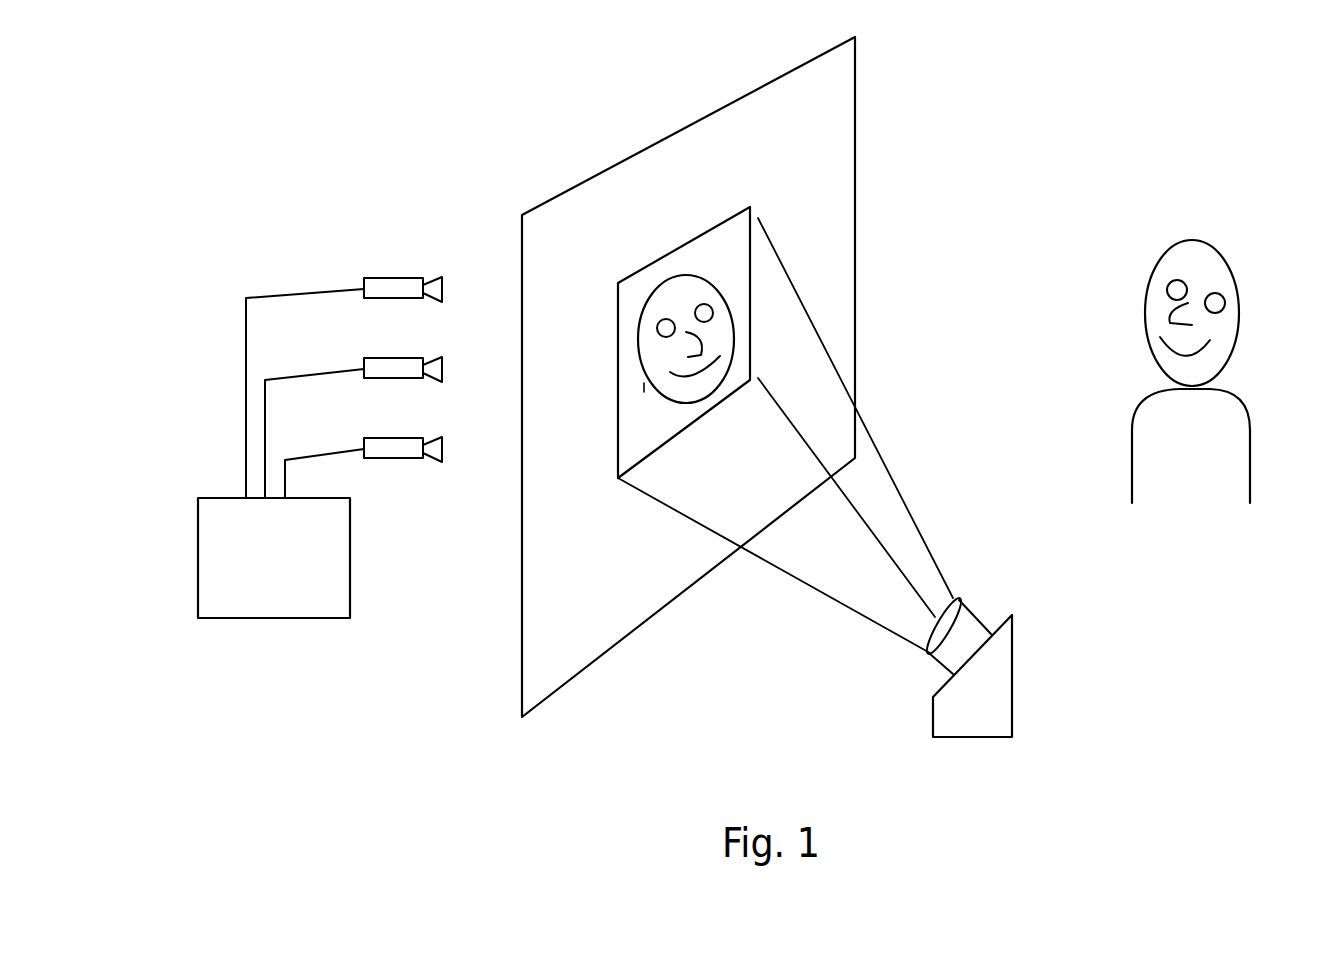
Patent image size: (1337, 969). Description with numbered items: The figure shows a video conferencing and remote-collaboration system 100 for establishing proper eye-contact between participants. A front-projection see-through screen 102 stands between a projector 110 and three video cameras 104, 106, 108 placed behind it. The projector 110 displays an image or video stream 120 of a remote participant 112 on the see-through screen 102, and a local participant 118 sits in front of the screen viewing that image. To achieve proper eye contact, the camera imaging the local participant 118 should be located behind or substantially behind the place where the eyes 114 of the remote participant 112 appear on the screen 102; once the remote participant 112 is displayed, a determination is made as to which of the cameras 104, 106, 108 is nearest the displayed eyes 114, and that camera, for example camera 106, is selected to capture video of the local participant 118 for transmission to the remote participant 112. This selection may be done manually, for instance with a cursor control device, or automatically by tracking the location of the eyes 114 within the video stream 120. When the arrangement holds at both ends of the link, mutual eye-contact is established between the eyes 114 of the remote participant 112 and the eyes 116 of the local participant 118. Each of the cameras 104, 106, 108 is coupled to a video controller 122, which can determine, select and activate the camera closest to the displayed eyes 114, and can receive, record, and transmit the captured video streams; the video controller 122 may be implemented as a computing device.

The video conferencing and/or remote-collaboration system 100 is at (268, 114).
The see-through screen 102 is at (562, 193).
The video camera 104 is at (404, 277).
The video camera 106 is at (404, 357).
The video camera 108 is at (404, 437).
The projector 110 is at (995, 712).
The remote participant 112 is at (680, 278).
The eyes of the remote participant 114 is at (657, 329).
The eyes of the local participant 116 is at (1226, 304).
The local participant 118 is at (1170, 248).
The video stream 120 is at (700, 233).
The video controller 122 is at (253, 596).